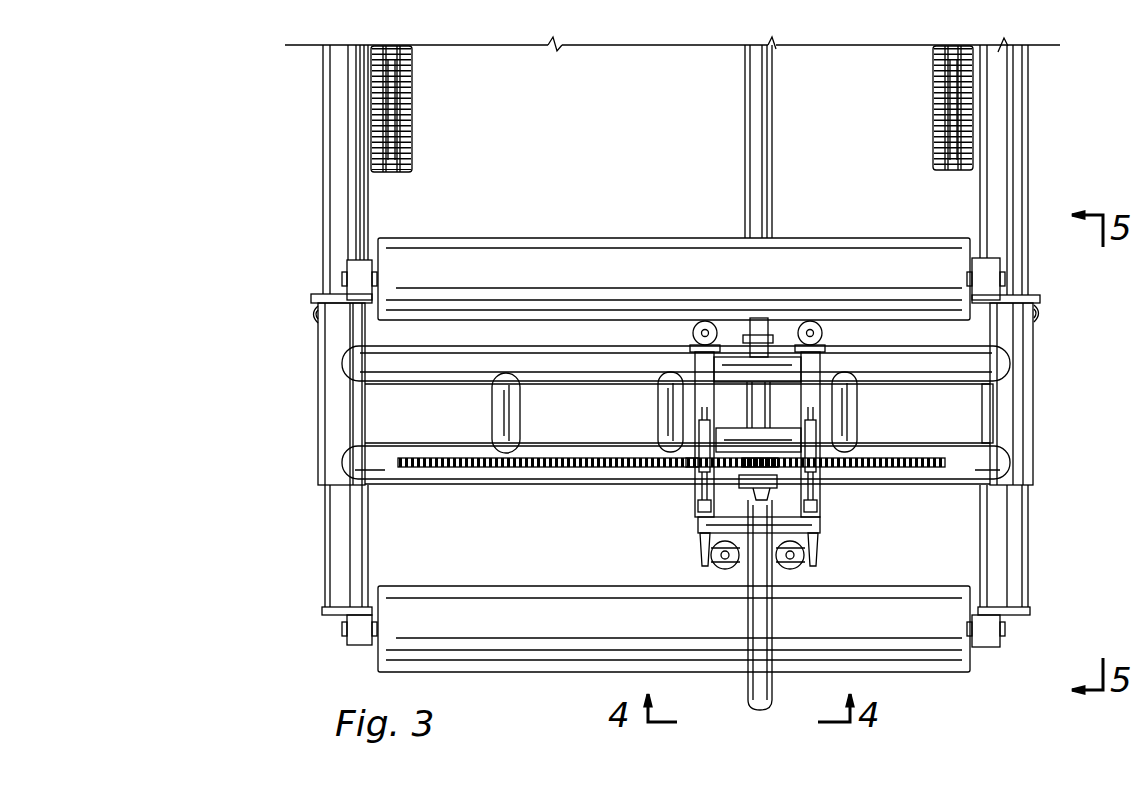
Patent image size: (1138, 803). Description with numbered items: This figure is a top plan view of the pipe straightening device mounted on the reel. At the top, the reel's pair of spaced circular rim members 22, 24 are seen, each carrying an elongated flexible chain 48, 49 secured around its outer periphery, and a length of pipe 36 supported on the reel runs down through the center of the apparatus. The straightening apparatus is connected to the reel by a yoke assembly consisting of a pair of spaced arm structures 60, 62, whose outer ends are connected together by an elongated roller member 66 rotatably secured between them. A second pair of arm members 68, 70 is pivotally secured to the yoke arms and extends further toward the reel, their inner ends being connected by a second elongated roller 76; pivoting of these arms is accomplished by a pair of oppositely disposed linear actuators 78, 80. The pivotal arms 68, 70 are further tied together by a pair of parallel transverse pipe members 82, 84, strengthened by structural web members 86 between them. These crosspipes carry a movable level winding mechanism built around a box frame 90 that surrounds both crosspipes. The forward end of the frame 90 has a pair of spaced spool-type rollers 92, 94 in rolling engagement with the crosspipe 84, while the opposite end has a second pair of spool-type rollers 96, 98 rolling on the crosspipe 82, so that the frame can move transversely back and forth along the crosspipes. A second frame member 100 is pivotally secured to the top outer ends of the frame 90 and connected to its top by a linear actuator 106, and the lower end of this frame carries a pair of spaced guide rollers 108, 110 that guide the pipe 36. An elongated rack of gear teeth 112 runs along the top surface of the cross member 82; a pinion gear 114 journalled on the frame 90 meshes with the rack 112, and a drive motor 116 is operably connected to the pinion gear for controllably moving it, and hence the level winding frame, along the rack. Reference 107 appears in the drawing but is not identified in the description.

The circular rim member 22 is at (934, 118).
The circular rim member 24 is at (408, 100).
The pipe 36 is at (773, 680).
The flexible chain 48 is at (940, 72).
The flexible chain 49 is at (396, 134).
The arm structure 60 is at (1028, 140).
The arm structure 62 is at (324, 106).
The elongated roller member 66 is at (478, 588).
The second arm member 68 is at (1033, 420).
The second arm member 70 is at (318, 410).
The second elongated roller 76 is at (495, 238).
The linear actuator 78 is at (1044, 320).
The linear actuator 80 is at (311, 316).
The transverse pipe member 82 is at (447, 480).
The transverse pipe member 84 is at (424, 384).
The structural web member 86 is at (492, 402).
The box frame 90 is at (700, 366).
The spool-type roller 92 is at (692, 334).
The spool-type roller 94 is at (824, 334).
The spool-type roller 96 is at (698, 490).
The spool-type roller 98 is at (826, 480).
The second frame member 100 is at (775, 490).
The linear actuator 106 is at (852, 418).
The rack segment 107 is at (700, 478).
The guide roller 108 is at (800, 565).
The guide roller 110 is at (716, 565).
The rack of gear teeth 112 is at (922, 458).
The pinion gear 114 is at (821, 521).
The drive motor 116 is at (700, 543).